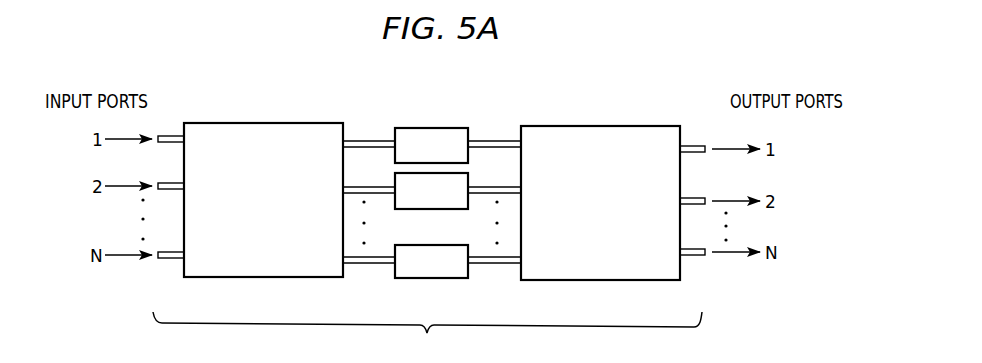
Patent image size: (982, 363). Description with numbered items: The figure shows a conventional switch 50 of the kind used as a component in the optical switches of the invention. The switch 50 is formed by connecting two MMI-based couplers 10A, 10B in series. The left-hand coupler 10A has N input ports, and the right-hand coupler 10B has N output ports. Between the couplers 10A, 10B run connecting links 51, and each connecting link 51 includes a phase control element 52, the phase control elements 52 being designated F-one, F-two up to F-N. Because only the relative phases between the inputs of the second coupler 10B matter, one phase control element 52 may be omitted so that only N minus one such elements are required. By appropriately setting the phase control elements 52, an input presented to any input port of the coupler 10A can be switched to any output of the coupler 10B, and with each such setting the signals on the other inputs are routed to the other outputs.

The MMI-based coupler 10A is at (274, 216).
The MMI-based coupler 10B is at (610, 210).
The connecting links 51 is at (371, 139).
The phase control elements 52 is at (431, 127).
The conventional switch 50 is at (427, 335).